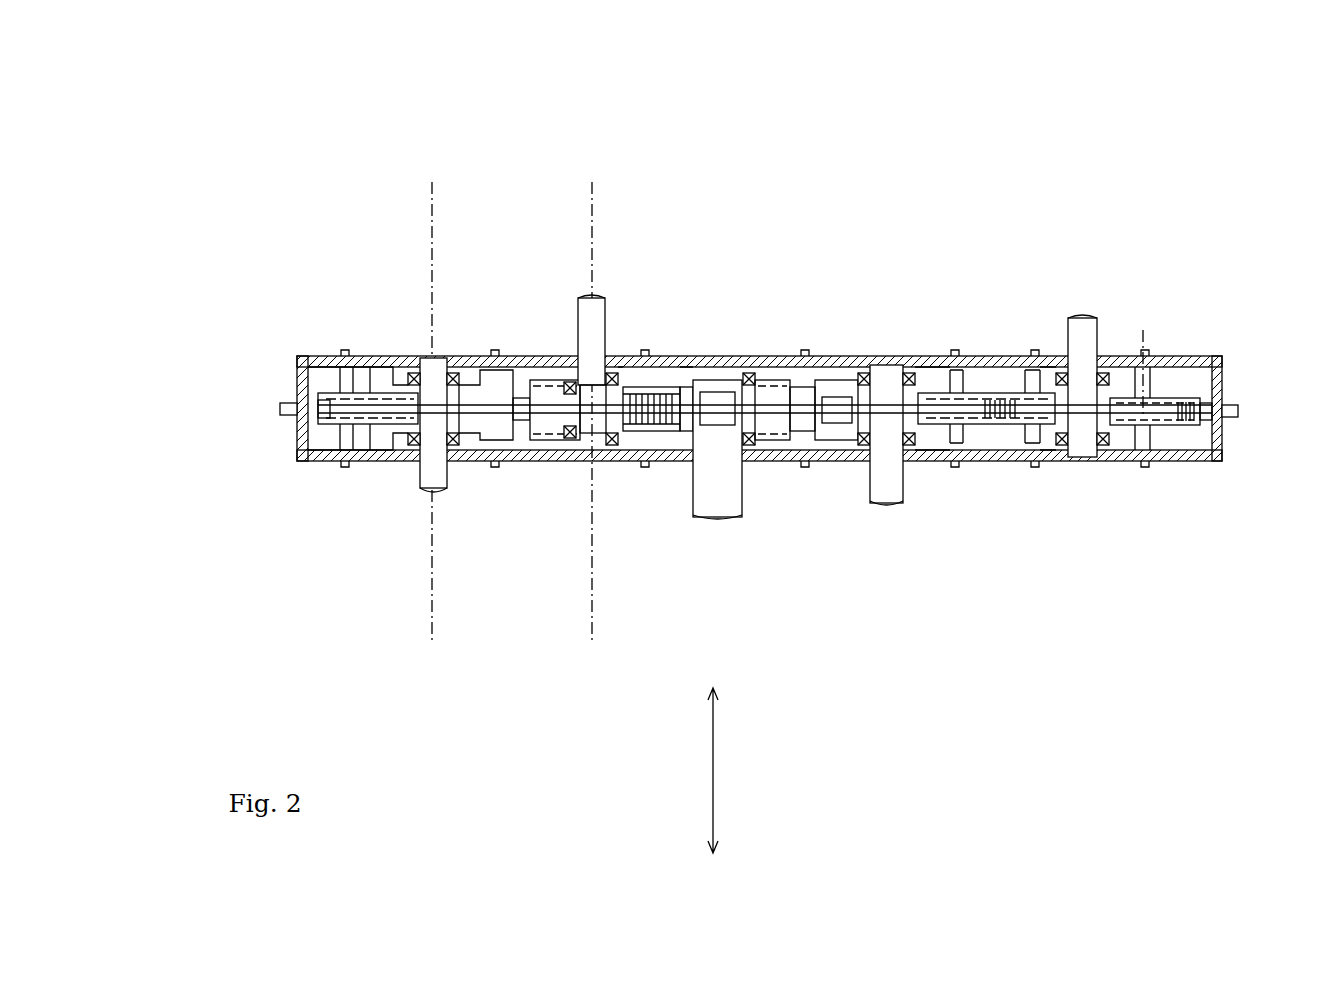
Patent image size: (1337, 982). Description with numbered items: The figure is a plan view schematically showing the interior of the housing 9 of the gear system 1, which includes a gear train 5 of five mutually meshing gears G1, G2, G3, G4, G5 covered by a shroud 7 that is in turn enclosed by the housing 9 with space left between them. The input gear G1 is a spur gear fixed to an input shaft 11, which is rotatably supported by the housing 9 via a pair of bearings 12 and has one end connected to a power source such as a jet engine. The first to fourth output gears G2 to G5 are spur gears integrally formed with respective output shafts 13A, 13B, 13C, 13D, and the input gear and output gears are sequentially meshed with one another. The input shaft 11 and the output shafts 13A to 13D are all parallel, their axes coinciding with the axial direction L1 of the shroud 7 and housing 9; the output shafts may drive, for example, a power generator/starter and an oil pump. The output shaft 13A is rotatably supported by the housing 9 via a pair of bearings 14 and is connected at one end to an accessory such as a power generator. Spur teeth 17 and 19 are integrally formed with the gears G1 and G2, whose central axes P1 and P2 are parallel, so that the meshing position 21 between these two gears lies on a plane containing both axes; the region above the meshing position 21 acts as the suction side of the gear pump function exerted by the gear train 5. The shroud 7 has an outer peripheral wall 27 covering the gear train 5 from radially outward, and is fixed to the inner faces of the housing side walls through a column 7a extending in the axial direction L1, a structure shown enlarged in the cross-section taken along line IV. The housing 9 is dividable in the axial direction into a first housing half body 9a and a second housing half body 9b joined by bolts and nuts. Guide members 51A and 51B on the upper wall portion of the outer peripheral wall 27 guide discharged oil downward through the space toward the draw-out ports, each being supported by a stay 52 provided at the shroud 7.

The gear system 1 is at (283, 155).
The gear train 5 is at (540, 108).
The input gear G1 is at (650, 395).
The first output gear G2 is at (388, 408).
The second output gear G3 is at (690, 390).
The third output gear G4 is at (955, 372).
The fourth output gear G5 is at (1040, 365).
The shroud 7 is at (330, 392).
The column 7a is at (968, 437).
The housing 9 is at (1218, 408).
The first housing half body 9a is at (1215, 375).
The second housing half body 9b is at (1215, 448).
The input shaft 11 is at (606, 328).
The bearings 12 is at (570, 372).
The output shaft 13A is at (413, 477).
The output shaft 13B is at (693, 500).
The output shaft 13C is at (873, 490).
The output shaft 13D is at (1068, 370).
The bearings 14 is at (418, 362).
The teeth 17 is at (636, 440).
The teeth 19 is at (335, 430).
The meshing position 21 is at (648, 440).
The outer peripheral wall 27 is at (475, 462).
The guide member 51A is at (530, 462).
The guide member 51B is at (745, 470).
The stay 52 is at (532, 378).
The central axis P1 is at (592, 216).
The central axis P2 is at (435, 208).
The axial direction L1 is at (713, 780).
The line IV- IV is at (1143, 335).